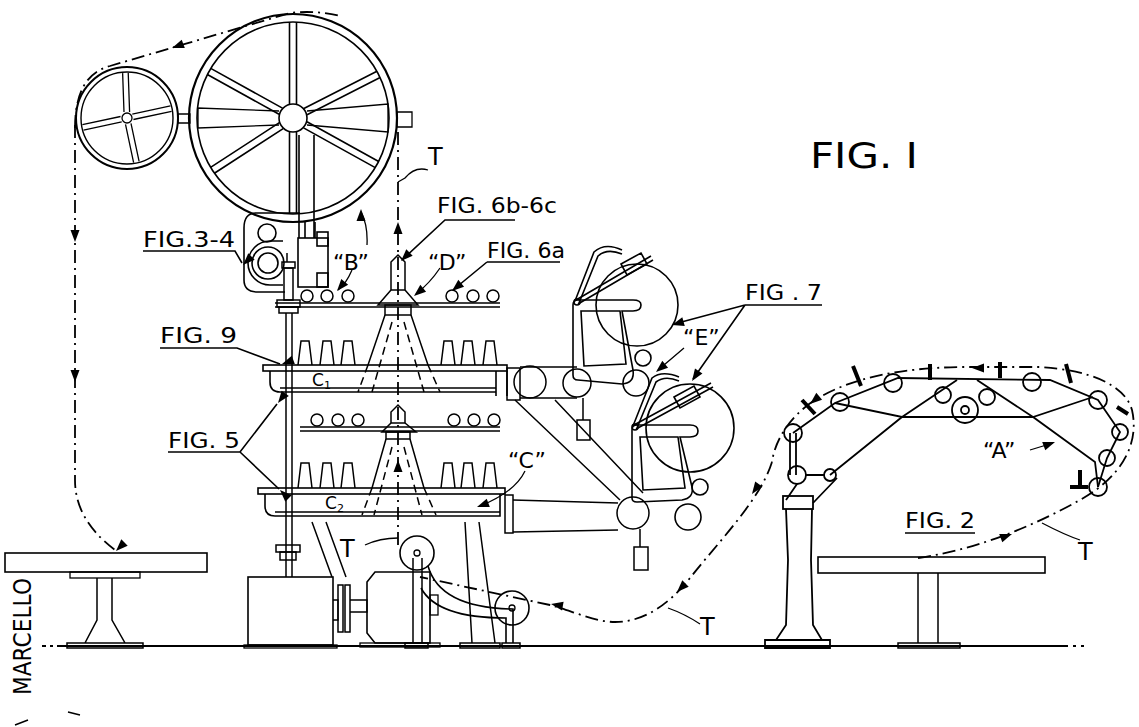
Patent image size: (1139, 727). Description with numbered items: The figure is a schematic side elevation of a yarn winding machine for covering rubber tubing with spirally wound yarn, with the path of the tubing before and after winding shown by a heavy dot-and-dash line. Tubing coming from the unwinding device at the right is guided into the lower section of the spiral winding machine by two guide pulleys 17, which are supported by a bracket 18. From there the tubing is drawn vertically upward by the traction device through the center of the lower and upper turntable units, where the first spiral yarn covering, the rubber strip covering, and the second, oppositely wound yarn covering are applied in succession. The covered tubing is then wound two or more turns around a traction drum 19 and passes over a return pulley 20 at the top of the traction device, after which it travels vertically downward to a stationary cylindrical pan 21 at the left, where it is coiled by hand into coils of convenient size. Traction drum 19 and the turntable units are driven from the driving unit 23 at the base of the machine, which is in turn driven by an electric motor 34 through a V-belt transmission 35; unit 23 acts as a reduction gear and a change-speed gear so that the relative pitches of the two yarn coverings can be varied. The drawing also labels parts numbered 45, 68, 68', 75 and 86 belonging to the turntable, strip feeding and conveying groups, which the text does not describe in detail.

The guide pulleys 17 is at (424, 553).
The bracket 18 is at (465, 610).
The traction drum 19 is at (375, 68).
The return pulley 20 is at (129, 76).
The cylindrical pan 21 is at (50, 562).
The driving unit 23 is at (300, 620).
The electric motor 34 is at (405, 620).
The V-belt transmission 35 is at (345, 640).
The spindle shaft 45 is at (285, 385).
The pivoted reel arm 68 is at (650, 321).
The second pivoted reel arm 68' is at (708, 452).
The conveyor belt 75 is at (565, 376).
The tension weight 86 is at (588, 430).